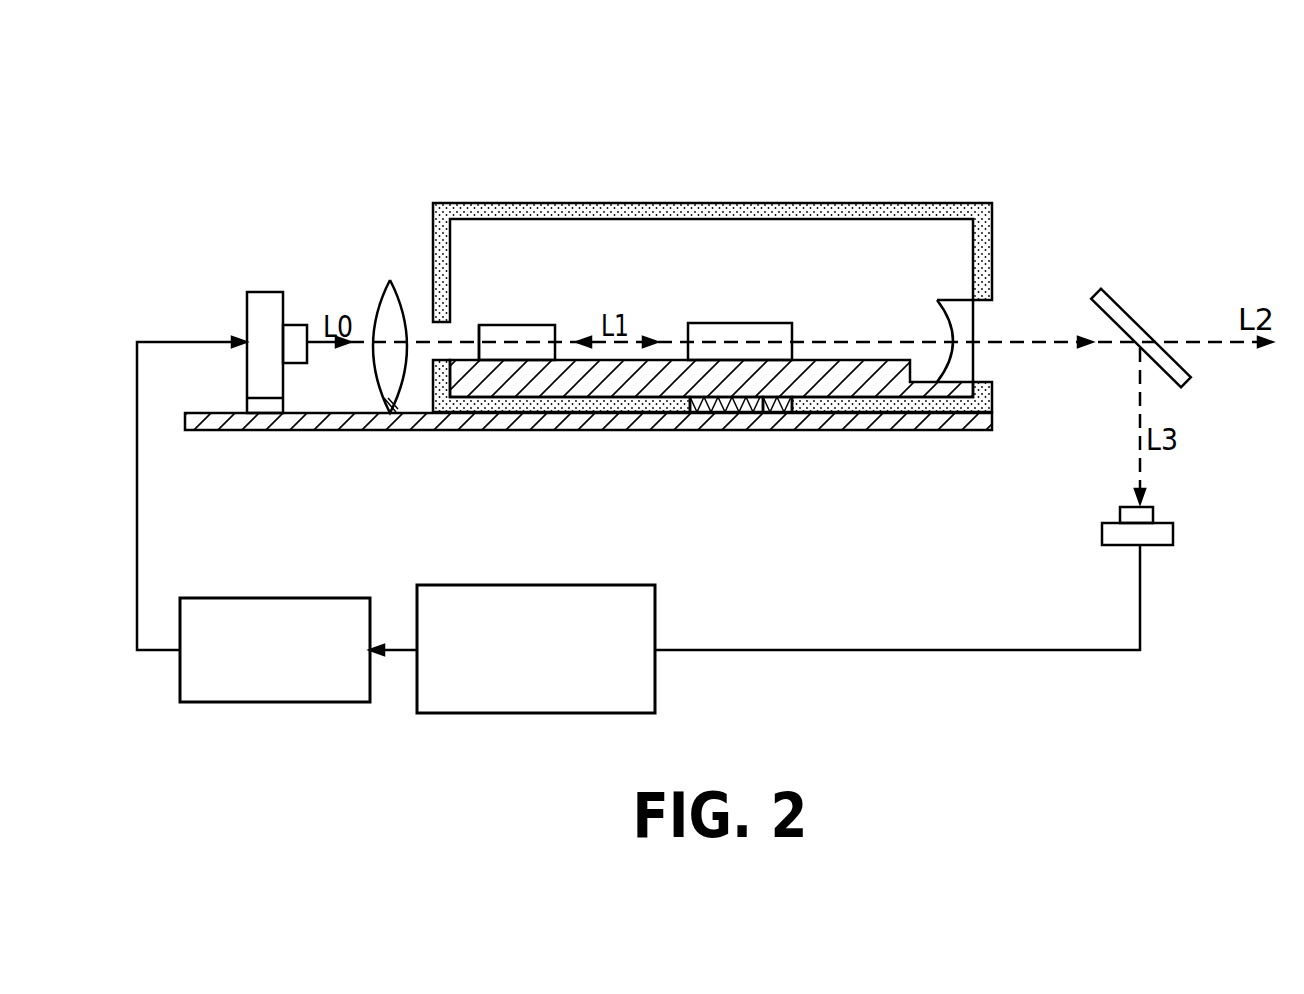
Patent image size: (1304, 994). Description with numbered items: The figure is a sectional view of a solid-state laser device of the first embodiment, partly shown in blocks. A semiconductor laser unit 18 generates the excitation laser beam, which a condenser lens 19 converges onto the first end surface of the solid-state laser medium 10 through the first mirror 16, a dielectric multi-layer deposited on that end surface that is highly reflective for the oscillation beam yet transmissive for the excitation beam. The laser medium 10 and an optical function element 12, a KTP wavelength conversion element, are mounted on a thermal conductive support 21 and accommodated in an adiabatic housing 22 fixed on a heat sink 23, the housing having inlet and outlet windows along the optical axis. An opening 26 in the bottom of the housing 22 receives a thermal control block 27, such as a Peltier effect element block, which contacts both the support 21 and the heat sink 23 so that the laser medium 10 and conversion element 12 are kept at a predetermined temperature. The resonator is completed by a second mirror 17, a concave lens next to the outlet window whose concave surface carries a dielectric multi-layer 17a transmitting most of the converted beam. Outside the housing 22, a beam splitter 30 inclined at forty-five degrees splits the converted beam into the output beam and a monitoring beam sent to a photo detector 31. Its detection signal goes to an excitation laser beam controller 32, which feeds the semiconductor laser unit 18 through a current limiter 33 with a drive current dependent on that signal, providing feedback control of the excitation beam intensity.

The solid-state laser medium 10 is at (518, 325).
The optical function element 12 is at (740, 323).
The first mirror 16 is at (480, 353).
The second mirror 17 is at (911, 304).
The dielectric multi-layer 17a is at (945, 320).
The semiconductor laser unit 18 is at (263, 292).
The condenser lens 19 is at (390, 280).
The thermal conductive support 21 is at (630, 383).
The adiabatic housing 22 is at (545, 203).
The heat sink 23 is at (884, 430).
The opening 26 is at (692, 412).
The thermal control block 27 is at (763, 412).
The beam splitter 30 is at (1133, 310).
The photo detector 31 is at (1173, 534).
The excitation laser beam controller 32 is at (533, 585).
The current limiter 33 is at (280, 598).